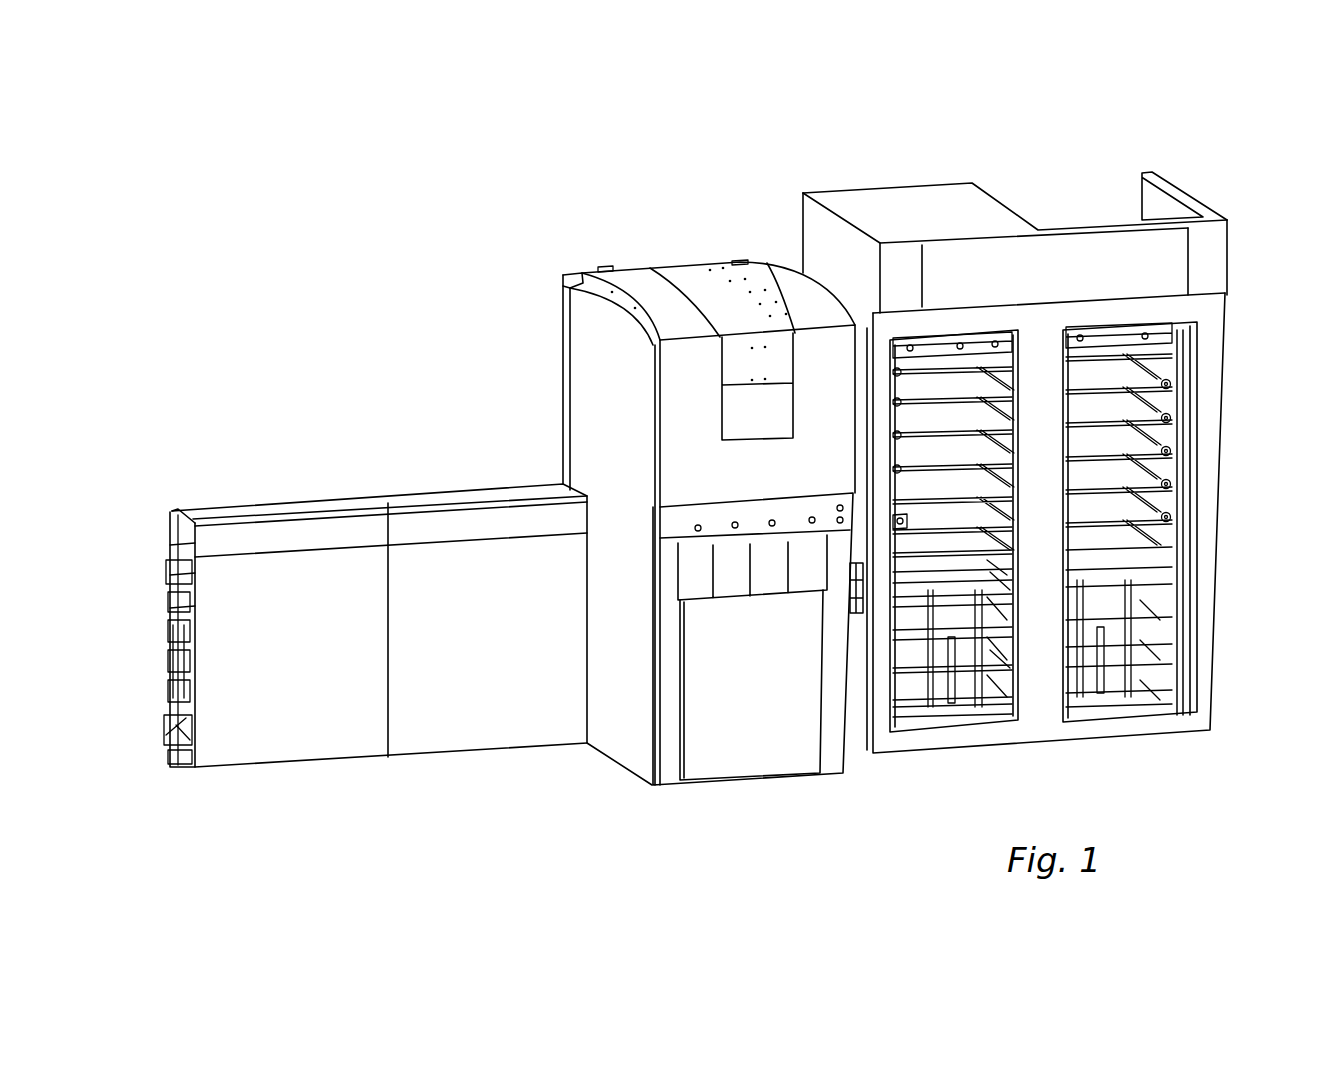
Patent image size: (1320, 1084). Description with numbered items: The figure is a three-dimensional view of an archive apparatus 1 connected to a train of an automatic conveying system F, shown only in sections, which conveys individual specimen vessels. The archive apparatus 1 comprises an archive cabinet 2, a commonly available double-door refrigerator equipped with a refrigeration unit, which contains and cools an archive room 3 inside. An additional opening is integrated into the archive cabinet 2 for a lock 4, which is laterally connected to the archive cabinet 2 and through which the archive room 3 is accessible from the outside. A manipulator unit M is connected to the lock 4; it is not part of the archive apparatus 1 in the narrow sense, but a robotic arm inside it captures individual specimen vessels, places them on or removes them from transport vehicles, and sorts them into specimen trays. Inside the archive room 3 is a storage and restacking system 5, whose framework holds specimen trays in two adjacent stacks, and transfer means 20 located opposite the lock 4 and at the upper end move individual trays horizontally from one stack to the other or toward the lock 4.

The archive apparatus 1 is at (770, 203).
The archive cabinet 2 is at (1050, 228).
The archive room 3 is at (1150, 663).
The lock 4 is at (850, 690).
The storage and restacking system 5 is at (1180, 443).
The transfer means 20 is at (1007, 330).
The manipulator unit M is at (595, 260).
The automatic conveying system F is at (312, 483).